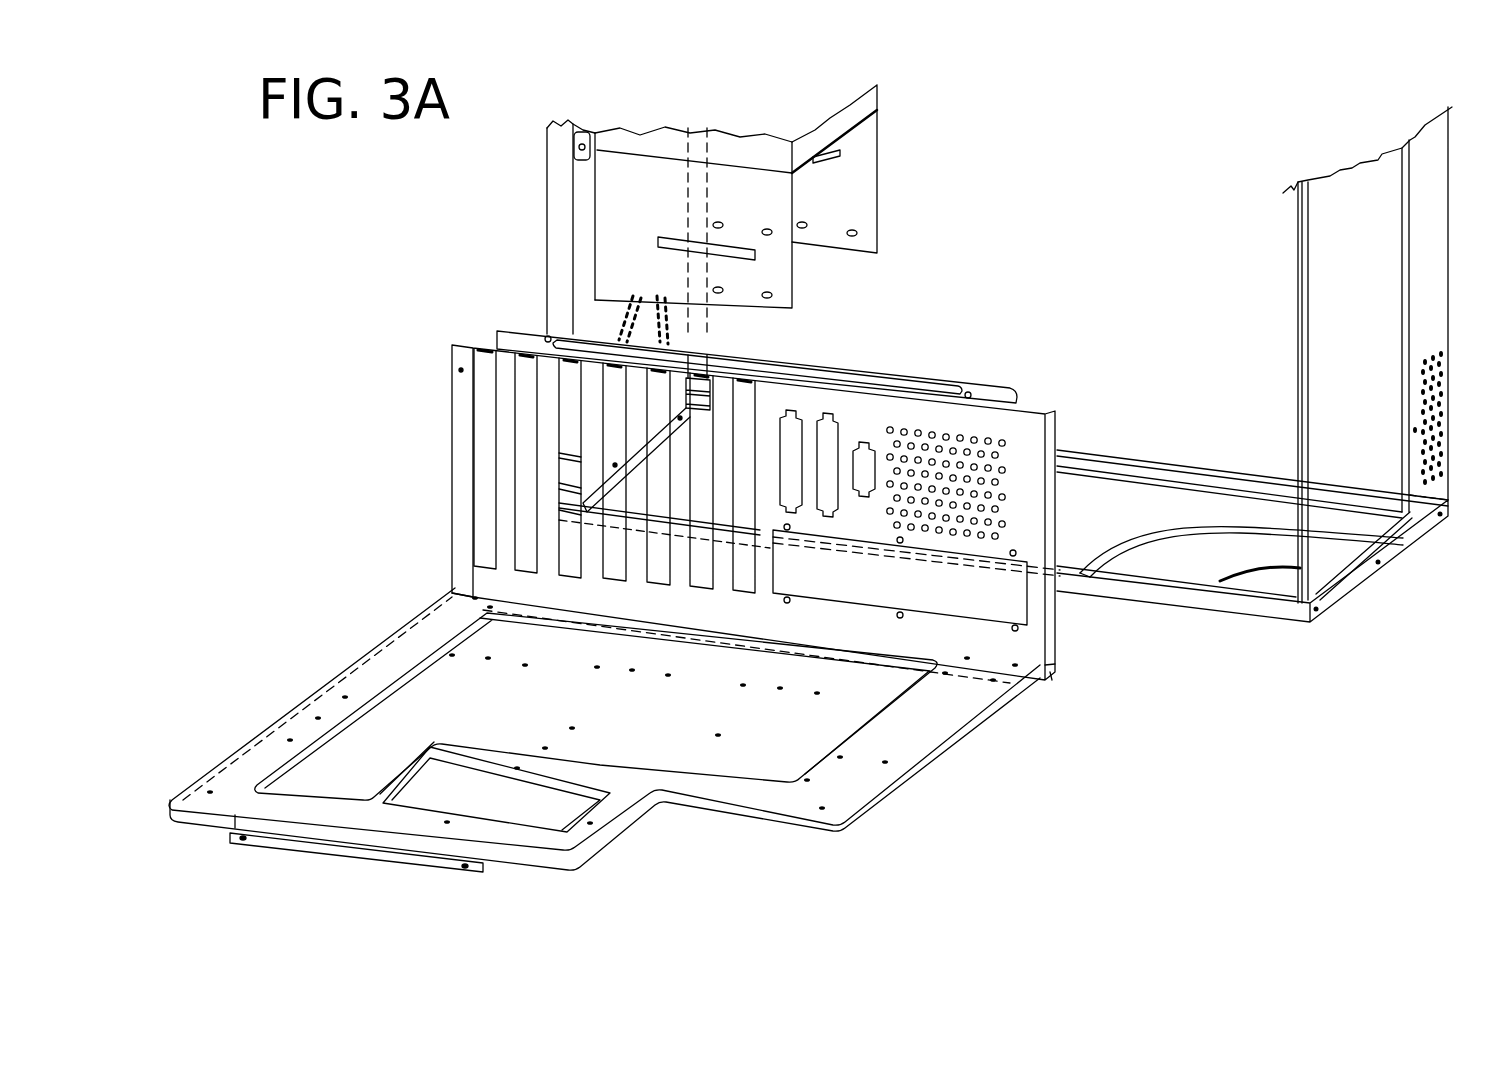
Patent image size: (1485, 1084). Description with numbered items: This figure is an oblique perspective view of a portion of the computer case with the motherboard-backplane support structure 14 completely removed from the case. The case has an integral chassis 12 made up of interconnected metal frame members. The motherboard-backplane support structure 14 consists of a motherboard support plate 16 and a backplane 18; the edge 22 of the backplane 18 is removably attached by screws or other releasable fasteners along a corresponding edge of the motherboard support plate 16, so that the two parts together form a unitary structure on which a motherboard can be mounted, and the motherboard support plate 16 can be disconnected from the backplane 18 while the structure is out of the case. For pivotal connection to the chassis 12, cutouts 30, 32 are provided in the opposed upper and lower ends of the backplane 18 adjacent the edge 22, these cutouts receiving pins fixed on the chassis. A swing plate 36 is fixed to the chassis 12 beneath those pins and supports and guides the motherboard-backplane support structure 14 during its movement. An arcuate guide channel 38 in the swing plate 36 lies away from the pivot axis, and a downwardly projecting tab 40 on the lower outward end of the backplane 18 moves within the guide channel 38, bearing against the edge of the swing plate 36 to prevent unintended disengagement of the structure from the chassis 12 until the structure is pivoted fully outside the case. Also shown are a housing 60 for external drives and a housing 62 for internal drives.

The chassis 12 is at (557, 271).
The motherboard-backplane support structure 14 is at (453, 522).
The motherboard support plate 16 is at (765, 790).
The backplane 18 is at (846, 407).
The edge 22 is at (597, 612).
The cutout 30 is at (1052, 670).
The cutout 32 is at (460, 587).
The swing plate 36 is at (1226, 571).
The arcuate guide channel 38 is at (1223, 528).
The downwardly projecting tab 40 is at (453, 390).
The housing 60 is at (877, 87).
The housing 62 is at (862, 190).